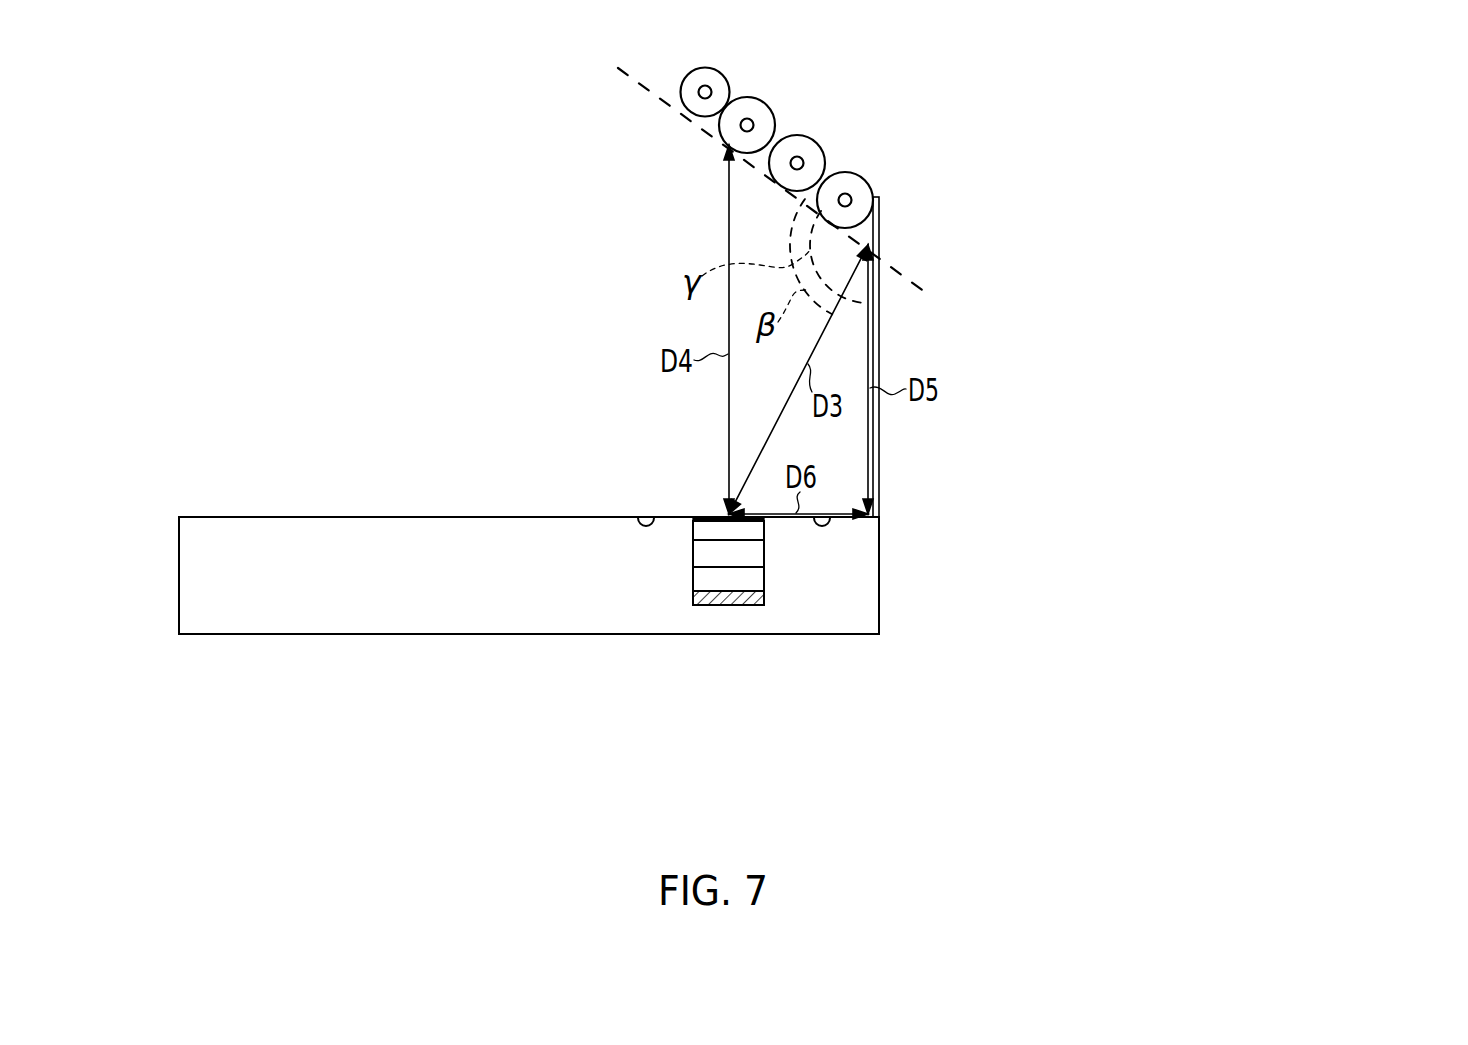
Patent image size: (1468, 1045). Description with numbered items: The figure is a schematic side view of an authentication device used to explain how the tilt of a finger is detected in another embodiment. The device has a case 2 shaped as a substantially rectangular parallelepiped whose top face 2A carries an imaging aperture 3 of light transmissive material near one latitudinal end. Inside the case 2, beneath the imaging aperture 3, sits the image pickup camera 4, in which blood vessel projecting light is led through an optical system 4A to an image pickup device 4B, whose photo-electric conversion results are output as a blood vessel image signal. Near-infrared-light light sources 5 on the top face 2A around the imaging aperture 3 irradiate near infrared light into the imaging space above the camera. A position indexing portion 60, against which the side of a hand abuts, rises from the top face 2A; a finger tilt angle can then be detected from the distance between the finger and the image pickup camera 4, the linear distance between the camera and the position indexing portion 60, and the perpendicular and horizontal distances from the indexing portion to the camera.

The case 2 is at (199, 523).
The top face 2A is at (168, 511).
The imaging aperture 3 is at (765, 521).
The image pickup camera 4 is at (956, 663).
The optical system 4A is at (692, 552).
The image pickup device 4B is at (702, 605).
The near-infrared-light light source 5 is at (830, 525).
The position indexing portion 60 is at (879, 236).